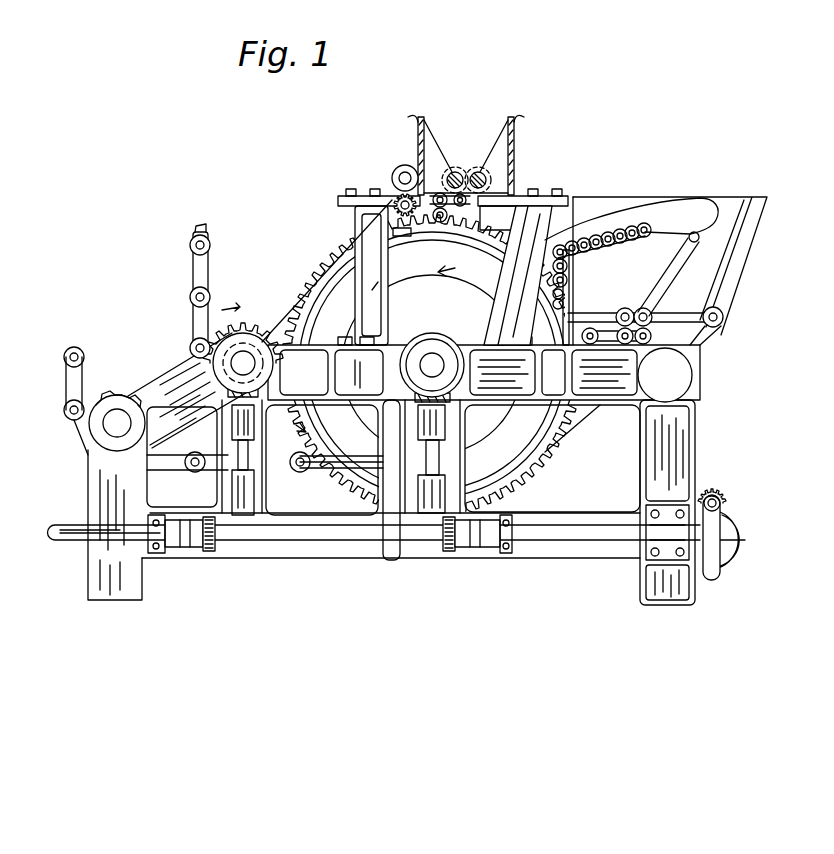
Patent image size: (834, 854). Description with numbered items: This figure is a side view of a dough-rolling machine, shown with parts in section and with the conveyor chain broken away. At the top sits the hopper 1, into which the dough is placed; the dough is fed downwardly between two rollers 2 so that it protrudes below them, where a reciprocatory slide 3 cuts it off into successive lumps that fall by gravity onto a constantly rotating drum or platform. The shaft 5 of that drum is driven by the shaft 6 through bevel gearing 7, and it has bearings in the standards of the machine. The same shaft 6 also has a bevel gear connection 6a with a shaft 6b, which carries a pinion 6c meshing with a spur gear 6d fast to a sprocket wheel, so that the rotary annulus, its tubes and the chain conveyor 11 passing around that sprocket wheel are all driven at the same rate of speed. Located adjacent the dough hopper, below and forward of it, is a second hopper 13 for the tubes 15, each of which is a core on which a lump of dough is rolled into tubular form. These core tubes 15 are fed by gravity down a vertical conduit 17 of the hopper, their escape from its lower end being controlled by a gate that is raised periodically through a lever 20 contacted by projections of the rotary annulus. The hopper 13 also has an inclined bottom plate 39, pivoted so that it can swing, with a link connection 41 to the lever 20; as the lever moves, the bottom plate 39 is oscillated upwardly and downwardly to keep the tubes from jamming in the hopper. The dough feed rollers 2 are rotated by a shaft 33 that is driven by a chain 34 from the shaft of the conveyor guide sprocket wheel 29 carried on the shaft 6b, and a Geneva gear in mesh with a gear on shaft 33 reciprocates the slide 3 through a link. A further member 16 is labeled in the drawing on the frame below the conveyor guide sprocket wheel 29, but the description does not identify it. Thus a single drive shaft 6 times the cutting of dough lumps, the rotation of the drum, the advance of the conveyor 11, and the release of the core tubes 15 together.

The hopper 1 is at (462, 127).
The rollers 2 is at (457, 172).
The reciprocatory slide 3 is at (483, 180).
The shaft 5 is at (432, 365).
The shaft 6 is at (345, 548).
The bevel gear connection 6a is at (212, 550).
The shaft 6b is at (236, 366).
The pinion 6c is at (268, 320).
The spur gear 6d is at (340, 262).
The bevel gearing 7 is at (447, 552).
The chain conveyor 11 is at (193, 273).
The hopper 13 is at (633, 206).
The tubes 15 is at (642, 232).
The vertical rod 16 is at (230, 483).
The vertical conduit 17 is at (569, 287).
The lever 20 is at (612, 314).
The conveyor guide sprocket wheel 29 is at (260, 322).
The shaft 33 is at (400, 167).
The chain 34 is at (299, 270).
The inclined bottom plate 39 is at (660, 240).
The link connection 41 is at (665, 296).